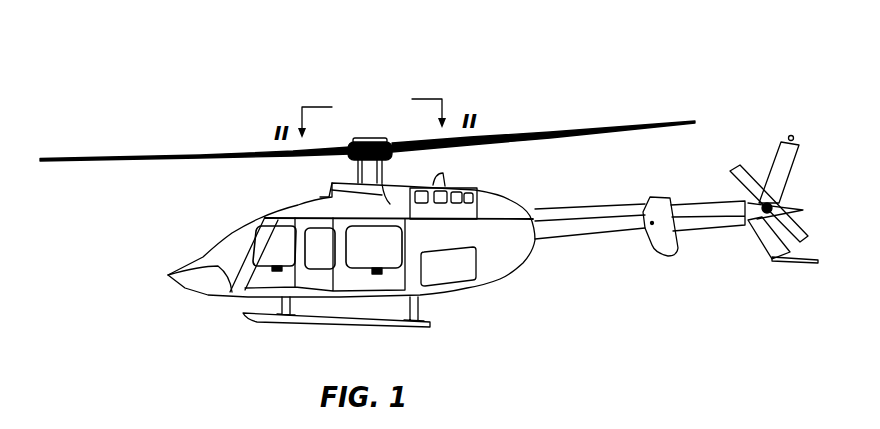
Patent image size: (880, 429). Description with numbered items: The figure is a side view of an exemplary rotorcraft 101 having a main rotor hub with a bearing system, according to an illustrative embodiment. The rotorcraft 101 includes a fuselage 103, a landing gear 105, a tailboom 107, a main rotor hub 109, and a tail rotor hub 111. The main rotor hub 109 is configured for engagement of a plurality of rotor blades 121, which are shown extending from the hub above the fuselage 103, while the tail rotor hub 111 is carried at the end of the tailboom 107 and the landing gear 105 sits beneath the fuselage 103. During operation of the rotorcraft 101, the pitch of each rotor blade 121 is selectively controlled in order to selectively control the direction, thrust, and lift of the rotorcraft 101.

The rotorcraft 101 is at (198, 93).
The fuselage 103 is at (467, 290).
The landing gear 105 is at (256, 318).
The tailboom 107 is at (588, 207).
The main rotor hub 109 is at (389, 102).
The tail rotor hub 111 is at (736, 243).
The rotor blade 121 is at (647, 121).